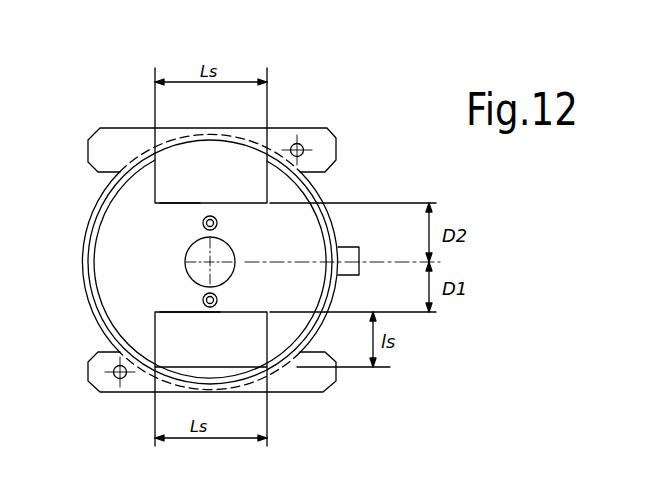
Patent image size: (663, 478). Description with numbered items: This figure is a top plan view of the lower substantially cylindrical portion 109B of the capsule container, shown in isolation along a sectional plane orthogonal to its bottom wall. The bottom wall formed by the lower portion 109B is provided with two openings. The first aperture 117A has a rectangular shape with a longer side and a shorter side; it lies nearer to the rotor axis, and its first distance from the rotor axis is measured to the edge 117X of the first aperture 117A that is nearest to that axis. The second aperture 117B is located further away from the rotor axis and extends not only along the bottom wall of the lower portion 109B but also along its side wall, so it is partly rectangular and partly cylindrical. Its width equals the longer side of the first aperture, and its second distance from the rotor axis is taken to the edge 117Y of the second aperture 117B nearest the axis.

The lower substantially cylindrical portion of the capsule container 109B is at (327, 196).
The second aperture 117B is at (226, 162).
The first aperture 117A is at (180, 350).
The edge of the second aperture nearest to the rotor axis 117Y is at (174, 199).
The edge of the first aperture nearest to the rotor axis 117X is at (192, 314).